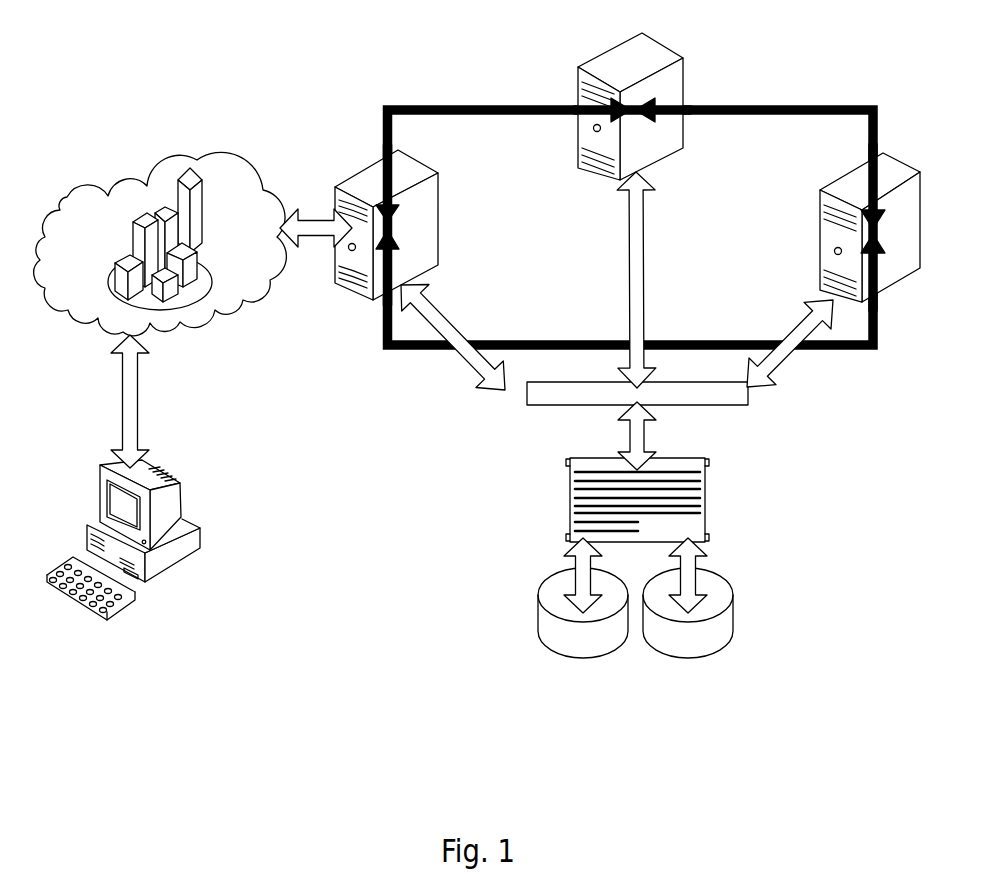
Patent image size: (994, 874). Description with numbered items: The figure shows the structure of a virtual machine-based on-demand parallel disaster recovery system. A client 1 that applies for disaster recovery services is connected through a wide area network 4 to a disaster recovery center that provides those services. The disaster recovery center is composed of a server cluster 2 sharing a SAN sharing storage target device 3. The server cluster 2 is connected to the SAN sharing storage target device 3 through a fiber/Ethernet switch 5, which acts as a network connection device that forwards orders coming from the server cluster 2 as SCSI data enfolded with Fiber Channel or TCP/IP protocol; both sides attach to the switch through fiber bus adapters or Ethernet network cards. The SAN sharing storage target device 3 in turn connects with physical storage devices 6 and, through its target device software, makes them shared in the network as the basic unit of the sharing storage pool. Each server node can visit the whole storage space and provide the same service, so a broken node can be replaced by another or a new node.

The client 1 is at (153, 515).
The server cluster 2 is at (507, 105).
The SAN sharing storage target device 3 is at (687, 503).
The wide area network 4 is at (93, 228).
The fiber/Ethernet switch 5 is at (543, 397).
The physical storage devices 6 is at (708, 633).